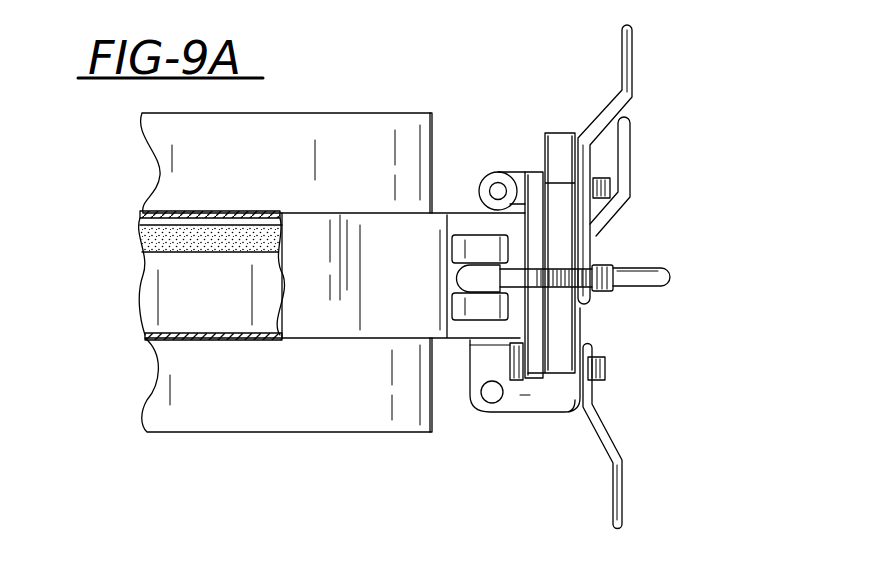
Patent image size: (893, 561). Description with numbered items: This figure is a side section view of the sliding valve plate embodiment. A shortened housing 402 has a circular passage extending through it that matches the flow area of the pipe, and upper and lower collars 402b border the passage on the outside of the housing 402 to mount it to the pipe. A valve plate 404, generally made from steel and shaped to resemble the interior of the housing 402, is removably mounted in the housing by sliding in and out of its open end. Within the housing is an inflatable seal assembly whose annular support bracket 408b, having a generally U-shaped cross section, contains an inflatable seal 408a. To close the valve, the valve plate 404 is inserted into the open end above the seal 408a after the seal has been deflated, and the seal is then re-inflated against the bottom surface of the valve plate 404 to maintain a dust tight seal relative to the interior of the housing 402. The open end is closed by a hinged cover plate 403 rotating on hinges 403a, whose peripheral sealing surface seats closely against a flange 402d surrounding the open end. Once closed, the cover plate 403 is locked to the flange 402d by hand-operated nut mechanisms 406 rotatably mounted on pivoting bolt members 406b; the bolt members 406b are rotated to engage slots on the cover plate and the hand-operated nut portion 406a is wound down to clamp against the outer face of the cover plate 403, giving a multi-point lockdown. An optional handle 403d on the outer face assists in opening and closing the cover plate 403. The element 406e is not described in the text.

The housing 402 is at (312, 333).
The upper and lower collars 402b is at (305, 112).
The flange 402d is at (538, 232).
The hinged cover plate 403 is at (563, 133).
The hinges 403a is at (520, 412).
The handle 403d is at (668, 286).
The valve plate 404 is at (227, 217).
The hand-operated nut mechanisms 406 is at (612, 178).
The hand-operated nut portion 406a is at (632, 45).
The pivoting bolt members 406b is at (517, 172).
The eyelet 406e is at (485, 190).
The inflatable seal 408a is at (180, 228).
The annular support bracket 408b is at (147, 297).